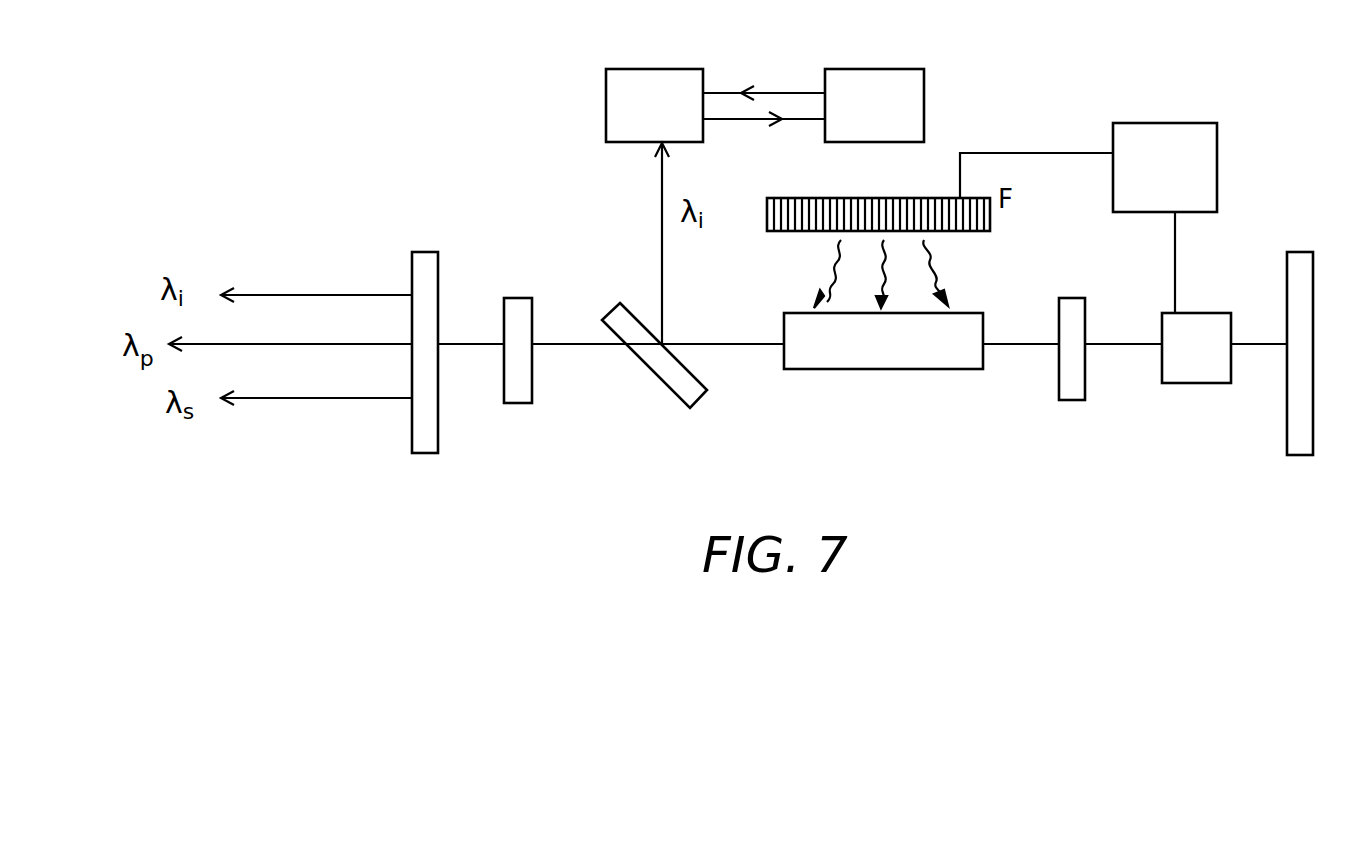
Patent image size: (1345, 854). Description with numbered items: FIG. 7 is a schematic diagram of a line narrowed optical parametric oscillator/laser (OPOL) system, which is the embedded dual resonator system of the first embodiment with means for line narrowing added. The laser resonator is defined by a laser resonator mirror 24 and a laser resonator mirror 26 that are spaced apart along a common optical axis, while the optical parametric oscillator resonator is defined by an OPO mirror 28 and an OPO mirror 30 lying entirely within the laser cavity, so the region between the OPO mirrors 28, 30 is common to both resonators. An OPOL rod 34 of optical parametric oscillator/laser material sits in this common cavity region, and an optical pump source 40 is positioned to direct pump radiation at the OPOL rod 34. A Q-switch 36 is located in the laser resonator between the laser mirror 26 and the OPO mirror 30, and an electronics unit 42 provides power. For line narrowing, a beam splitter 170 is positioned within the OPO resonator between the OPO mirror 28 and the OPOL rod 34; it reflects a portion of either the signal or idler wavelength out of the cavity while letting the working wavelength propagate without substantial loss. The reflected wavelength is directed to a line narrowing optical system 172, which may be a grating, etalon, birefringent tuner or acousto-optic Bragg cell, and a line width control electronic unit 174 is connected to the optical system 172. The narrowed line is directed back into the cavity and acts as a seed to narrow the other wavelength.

The laser resonator mirror 24 is at (428, 252).
The OPO mirror 28 is at (518, 298).
The OPO mirror 30 is at (1082, 298).
The laser resonator mirror 26 is at (1302, 252).
The OPOL rod 34 is at (878, 369).
The Q-switch 36 is at (1214, 383).
The optical pump source 40 is at (832, 198).
The electronics unit 42 is at (1184, 123).
The beam splitter 170 is at (673, 392).
The line narrowing optical system 172 is at (627, 69).
The line width control electronic unit 174 is at (884, 69).